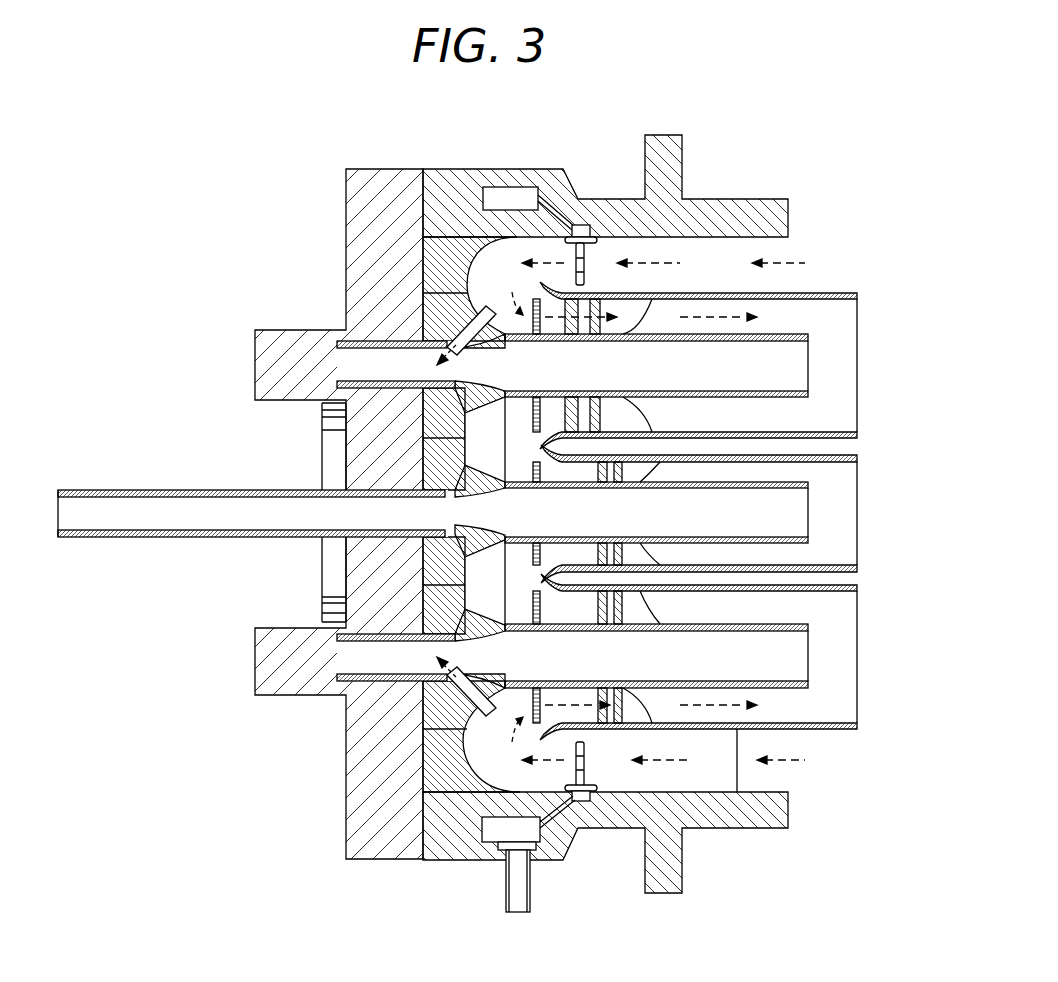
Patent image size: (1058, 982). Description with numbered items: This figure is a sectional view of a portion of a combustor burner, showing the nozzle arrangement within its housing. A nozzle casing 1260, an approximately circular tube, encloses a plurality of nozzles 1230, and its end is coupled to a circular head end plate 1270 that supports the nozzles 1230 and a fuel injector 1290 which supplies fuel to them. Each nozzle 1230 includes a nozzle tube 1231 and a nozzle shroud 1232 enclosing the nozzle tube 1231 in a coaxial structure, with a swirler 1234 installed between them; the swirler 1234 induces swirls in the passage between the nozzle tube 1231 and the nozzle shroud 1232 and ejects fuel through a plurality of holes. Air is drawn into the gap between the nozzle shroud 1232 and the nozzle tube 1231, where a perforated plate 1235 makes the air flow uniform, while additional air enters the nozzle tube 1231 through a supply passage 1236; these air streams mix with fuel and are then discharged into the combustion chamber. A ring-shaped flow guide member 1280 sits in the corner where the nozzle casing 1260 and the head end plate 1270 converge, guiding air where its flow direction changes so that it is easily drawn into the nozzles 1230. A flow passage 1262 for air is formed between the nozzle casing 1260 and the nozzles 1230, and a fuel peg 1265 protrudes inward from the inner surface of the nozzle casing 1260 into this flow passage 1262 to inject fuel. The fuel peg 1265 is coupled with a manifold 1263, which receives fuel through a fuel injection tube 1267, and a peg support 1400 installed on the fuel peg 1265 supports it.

The nozzle 1230 is at (722, 432).
The nozzle tube 1231 is at (760, 395).
The nozzle shroud 1232 is at (838, 292).
The swirler 1234 is at (618, 322).
The perforated plate 1235 is at (548, 294).
The supply passage 1236 is at (488, 310).
The nozzle casing 1260 is at (743, 830).
The flow passage 1262 is at (728, 266).
The manifold 1263 is at (515, 826).
The fuel peg 1265 is at (600, 760).
The fuel injection tube 1267 is at (531, 890).
The head end plate 1270 is at (383, 838).
The flow guide member 1280 is at (467, 234).
The fuel injector 1290 is at (127, 490).
The peg support 1400 is at (612, 792).